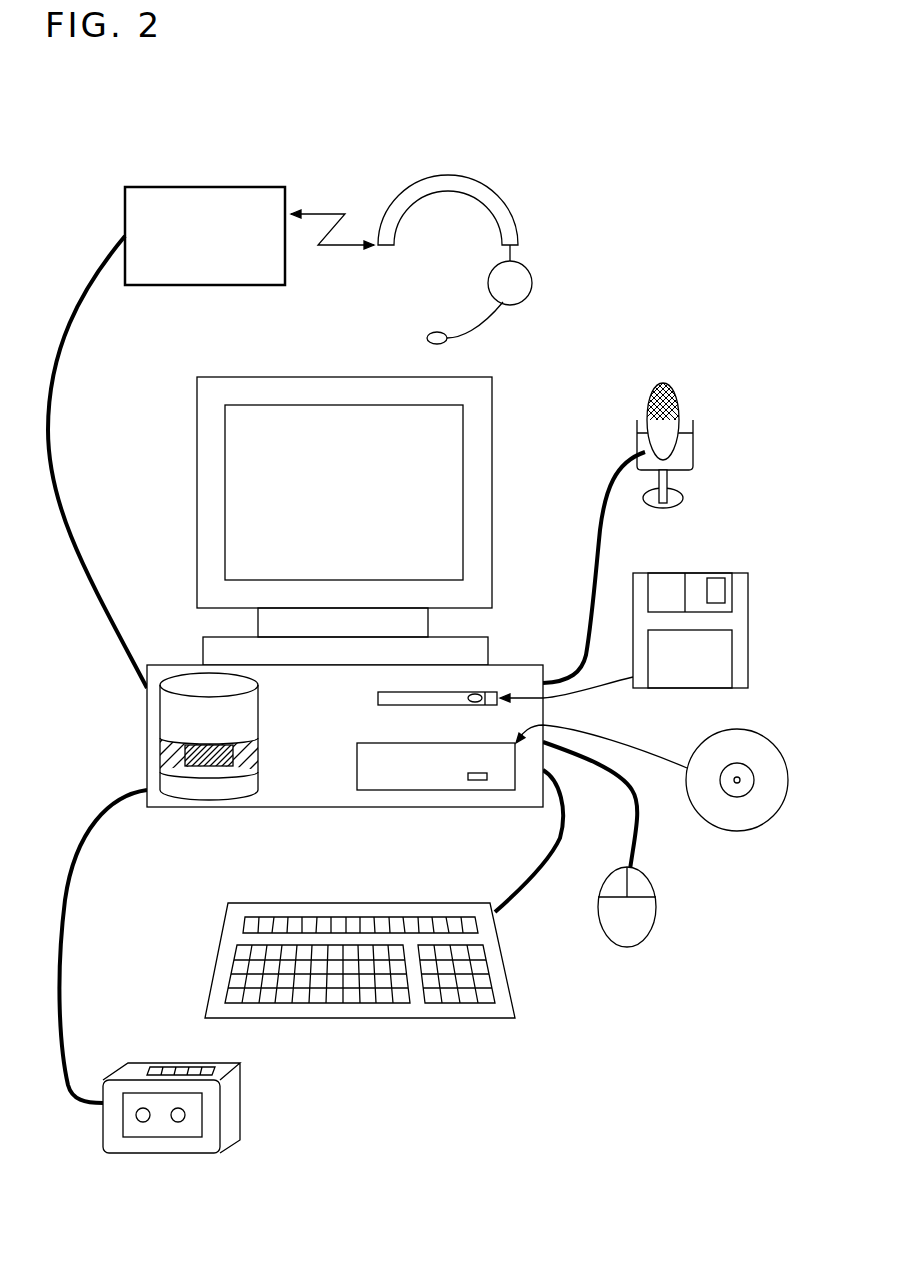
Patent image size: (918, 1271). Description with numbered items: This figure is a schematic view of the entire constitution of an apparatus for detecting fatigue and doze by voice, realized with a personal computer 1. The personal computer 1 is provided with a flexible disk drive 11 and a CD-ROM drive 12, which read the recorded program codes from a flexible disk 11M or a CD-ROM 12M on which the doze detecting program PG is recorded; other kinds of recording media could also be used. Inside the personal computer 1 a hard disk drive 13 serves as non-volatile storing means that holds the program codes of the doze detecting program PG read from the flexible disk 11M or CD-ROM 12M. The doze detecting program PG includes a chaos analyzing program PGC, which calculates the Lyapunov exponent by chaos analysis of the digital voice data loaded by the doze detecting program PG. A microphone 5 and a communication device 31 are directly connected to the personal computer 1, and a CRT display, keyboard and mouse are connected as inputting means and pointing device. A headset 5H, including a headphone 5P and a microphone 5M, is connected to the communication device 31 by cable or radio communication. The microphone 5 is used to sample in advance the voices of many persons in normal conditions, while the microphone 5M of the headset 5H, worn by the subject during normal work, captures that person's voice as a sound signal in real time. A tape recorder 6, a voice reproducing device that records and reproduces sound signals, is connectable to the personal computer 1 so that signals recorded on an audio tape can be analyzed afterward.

The personal computer 1 is at (170, 640).
The communication device 31 is at (125, 218).
The microphone 5 is at (640, 389).
The headset 5H is at (481, 243).
The headphone 5P is at (485, 285).
The microphone 5M is at (428, 334).
The flexible disk drive 11 is at (378, 698).
The CD-ROM drive 12 is at (357, 768).
The hard disk drive 13 is at (184, 771).
The flexible disk 11M is at (748, 625).
The CD-ROM 12M is at (757, 831).
The doze detecting program PG is at (160, 765).
The chaos analyzing program PGC is at (197, 745).
The tape recorder 6 is at (235, 1107).